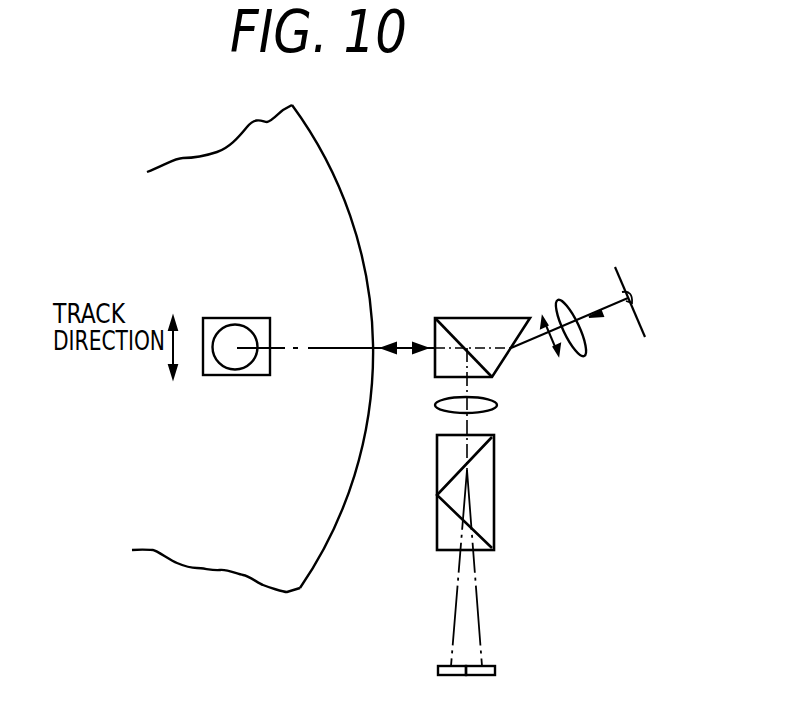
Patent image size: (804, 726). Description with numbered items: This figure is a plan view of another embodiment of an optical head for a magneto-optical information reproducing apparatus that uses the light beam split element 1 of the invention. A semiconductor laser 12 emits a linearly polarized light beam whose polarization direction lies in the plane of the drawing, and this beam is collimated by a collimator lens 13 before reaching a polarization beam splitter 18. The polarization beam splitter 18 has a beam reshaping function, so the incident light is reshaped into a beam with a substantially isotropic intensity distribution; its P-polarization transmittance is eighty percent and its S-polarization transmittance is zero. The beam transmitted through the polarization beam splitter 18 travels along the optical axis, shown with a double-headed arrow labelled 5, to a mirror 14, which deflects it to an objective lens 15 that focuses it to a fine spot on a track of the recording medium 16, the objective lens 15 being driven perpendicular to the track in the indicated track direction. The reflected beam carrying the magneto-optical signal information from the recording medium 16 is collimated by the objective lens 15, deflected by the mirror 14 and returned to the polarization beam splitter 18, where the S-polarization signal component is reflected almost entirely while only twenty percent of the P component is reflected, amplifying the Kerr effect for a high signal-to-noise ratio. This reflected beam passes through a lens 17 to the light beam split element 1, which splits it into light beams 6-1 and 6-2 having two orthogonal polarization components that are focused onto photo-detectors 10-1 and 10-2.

The recording medium 16 is at (332, 213).
The mirror 14 is at (263, 363).
The objective lens 15 is at (233, 328).
The light beam 5 is at (405, 350).
The polarization beam splitter 18 is at (483, 322).
The collimator lens 13 is at (585, 350).
The semiconductor laser 12 is at (634, 299).
The lens 17 is at (495, 412).
The light beam split element 1 is at (498, 477).
The light beam 6-1 is at (483, 643).
The light beam 6-2 is at (450, 642).
The photo-detector 10-1 is at (485, 676).
The photo-detector 10-2 is at (440, 672).